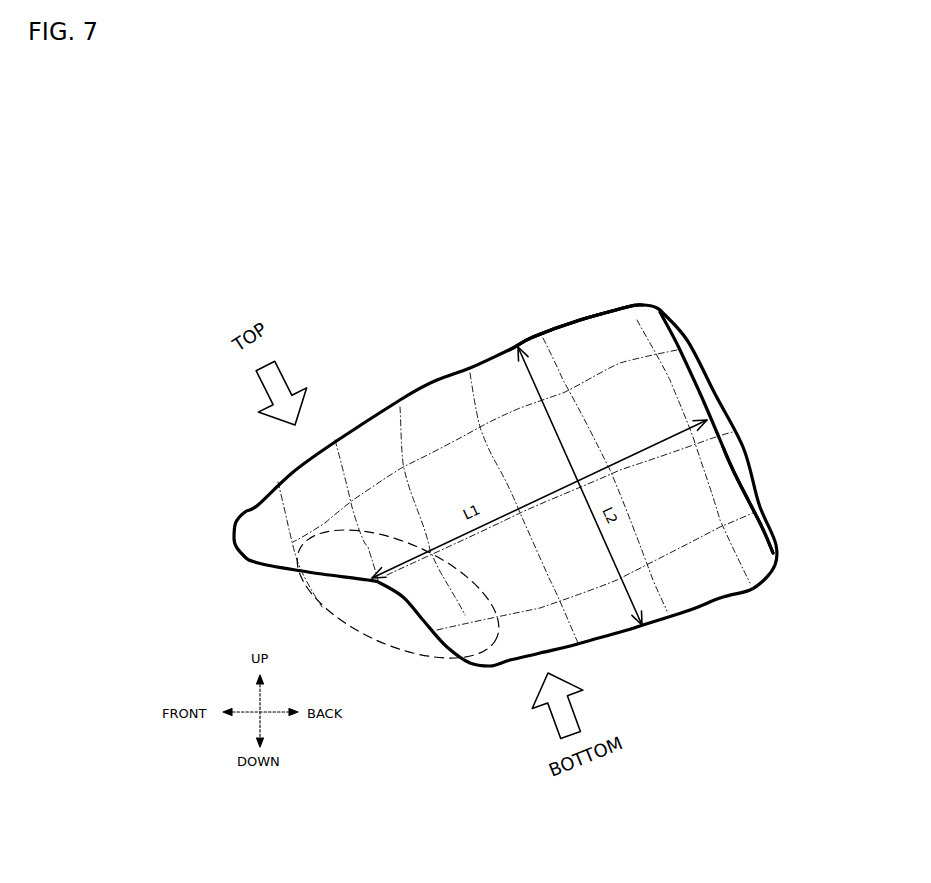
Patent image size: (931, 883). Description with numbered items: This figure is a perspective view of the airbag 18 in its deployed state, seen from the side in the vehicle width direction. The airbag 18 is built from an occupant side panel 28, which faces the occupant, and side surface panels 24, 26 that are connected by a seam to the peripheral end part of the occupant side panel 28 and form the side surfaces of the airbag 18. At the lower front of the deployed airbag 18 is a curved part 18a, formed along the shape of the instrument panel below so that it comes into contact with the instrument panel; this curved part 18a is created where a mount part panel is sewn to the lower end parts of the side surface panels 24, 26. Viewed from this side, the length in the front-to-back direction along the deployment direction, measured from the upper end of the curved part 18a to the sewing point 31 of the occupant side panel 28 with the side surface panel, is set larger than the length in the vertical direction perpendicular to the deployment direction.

The airbag 18 is at (443, 278).
The curved part 18a is at (392, 645).
The side surface panel 24 is at (583, 328).
The side surface panel 26 is at (583, 289).
The occupant side panel 28 is at (705, 387).
The sewing point 31 is at (737, 468).